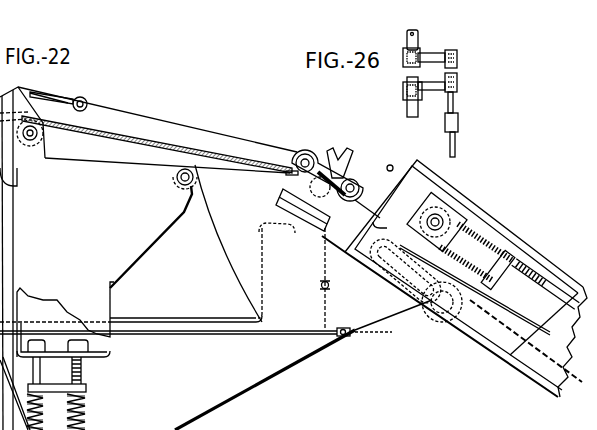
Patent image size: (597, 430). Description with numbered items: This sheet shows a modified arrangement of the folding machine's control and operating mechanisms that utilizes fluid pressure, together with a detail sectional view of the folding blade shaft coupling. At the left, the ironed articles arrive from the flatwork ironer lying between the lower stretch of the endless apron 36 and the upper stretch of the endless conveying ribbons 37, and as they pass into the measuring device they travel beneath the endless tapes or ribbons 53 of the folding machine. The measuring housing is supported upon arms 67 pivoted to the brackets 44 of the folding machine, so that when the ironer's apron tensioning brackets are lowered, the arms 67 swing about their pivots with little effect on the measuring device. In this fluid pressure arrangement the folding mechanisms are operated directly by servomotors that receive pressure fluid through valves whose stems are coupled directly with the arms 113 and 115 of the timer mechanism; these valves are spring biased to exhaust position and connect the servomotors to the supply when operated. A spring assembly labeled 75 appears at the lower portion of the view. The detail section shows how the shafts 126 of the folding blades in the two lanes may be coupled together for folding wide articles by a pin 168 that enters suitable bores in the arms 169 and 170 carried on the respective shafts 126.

In FIG. 22, the endless apron 36 is at (443, 207).
In FIG. 22, the endless conveying ribbons 37 is at (100, 135).
In FIG. 22, the brackets 44 is at (57, 345).
In FIG. 22, the endless tapes or ribbons 53 is at (241, 152).
In FIG. 22, the arms 67 is at (230, 253).
In FIG. 22, the spring assembly 75 is at (281, 412).
In FIG. 22, the arm of the timer mechanism 113 is at (268, 427).
In FIG. 22, the arm of the timer mechanism 115 is at (131, 373).
In FIG. 26, the shafts of the folding blades 126 is at (407, 37).
In FIG. 26, the pin 168 is at (458, 108).
In FIG. 26, the arm 169 is at (433, 88).
In FIG. 26, the arm 170 is at (427, 63).